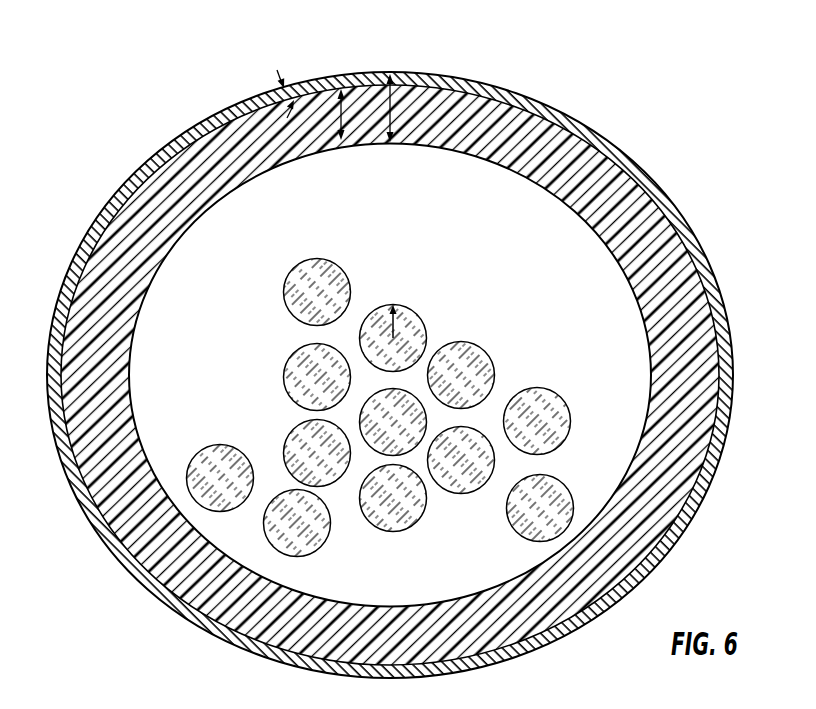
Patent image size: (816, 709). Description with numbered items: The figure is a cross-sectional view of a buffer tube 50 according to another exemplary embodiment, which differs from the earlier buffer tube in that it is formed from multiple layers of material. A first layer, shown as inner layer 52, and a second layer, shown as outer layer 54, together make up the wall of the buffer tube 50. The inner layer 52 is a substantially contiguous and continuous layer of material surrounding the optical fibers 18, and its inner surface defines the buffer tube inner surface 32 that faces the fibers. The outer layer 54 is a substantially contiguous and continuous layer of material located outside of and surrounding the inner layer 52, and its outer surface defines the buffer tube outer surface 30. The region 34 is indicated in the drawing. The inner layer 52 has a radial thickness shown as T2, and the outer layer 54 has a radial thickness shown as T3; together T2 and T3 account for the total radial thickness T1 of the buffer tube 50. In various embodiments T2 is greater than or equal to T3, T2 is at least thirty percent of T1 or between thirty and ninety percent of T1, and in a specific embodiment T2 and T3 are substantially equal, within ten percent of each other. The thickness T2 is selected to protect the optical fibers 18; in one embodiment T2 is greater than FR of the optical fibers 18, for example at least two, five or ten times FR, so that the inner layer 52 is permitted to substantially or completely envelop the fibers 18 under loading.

The buffer tube 50 is at (740, 83).
The buffer tube outer surface 30 is at (638, 148).
The buffer tube inner surface 32 is at (476, 168).
The interior cavity 34 is at (592, 246).
The inner layer 52 is at (690, 250).
The outer layer 54 is at (735, 332).
The optical fibers 18 is at (490, 457).
The FR of optical fibers FR is at (397, 325).
The total thickness T1 is at (413, 73).
The thickness of inner layer T2 is at (362, 74).
The thickness of outer layer T3 is at (282, 94).